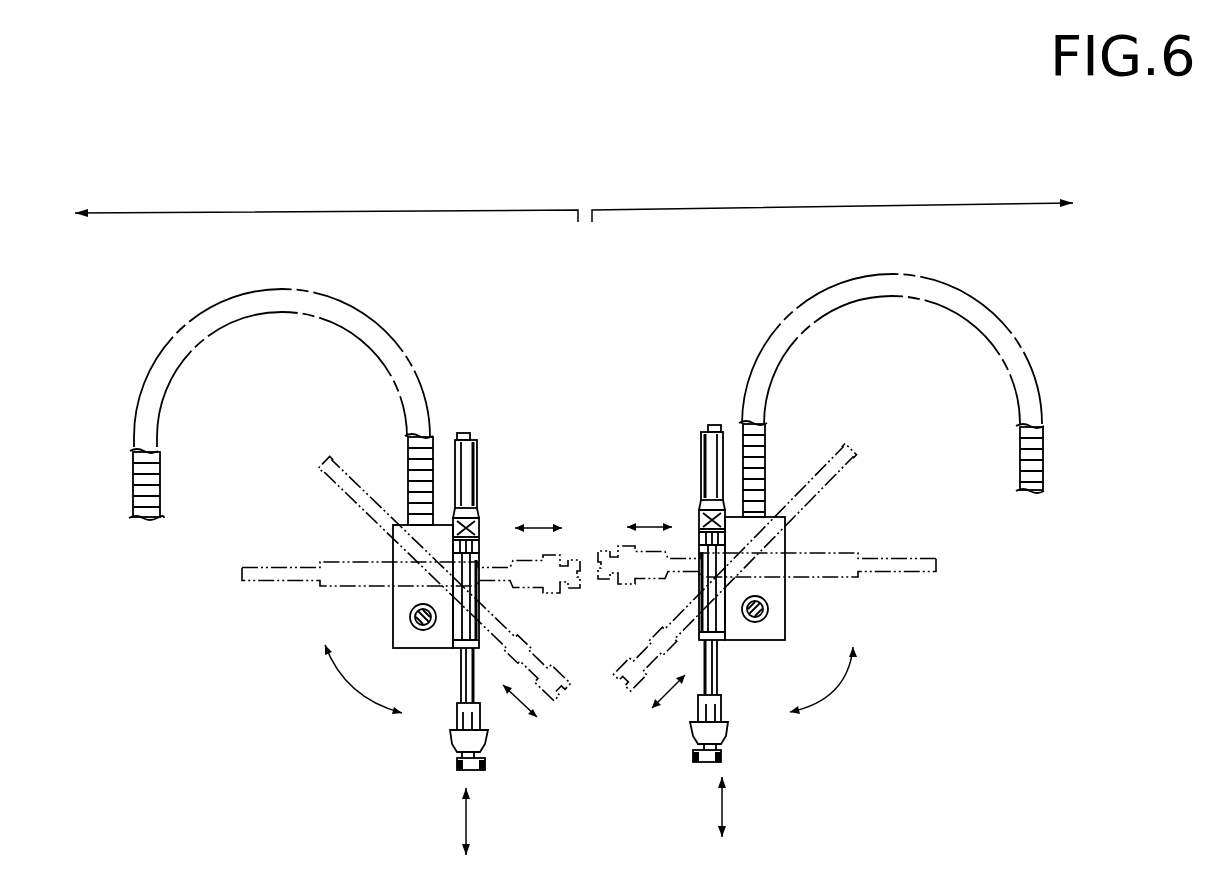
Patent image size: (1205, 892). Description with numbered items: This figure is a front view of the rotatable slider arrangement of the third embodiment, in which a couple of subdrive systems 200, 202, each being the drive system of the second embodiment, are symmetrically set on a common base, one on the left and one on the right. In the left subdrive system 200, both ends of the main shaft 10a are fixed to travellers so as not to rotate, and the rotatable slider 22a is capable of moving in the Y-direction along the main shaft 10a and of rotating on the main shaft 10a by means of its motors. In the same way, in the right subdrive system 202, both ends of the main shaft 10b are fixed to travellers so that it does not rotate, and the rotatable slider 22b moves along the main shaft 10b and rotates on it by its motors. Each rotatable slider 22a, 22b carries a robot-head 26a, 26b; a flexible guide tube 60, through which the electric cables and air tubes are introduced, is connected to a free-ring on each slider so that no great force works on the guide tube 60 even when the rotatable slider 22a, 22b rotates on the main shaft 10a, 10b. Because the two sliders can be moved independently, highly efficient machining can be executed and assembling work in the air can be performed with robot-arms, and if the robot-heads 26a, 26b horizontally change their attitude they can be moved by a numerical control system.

The subdrive system 200 is at (192, 213).
The subdrive system 202 is at (955, 203).
The flexible guide tube 60 is at (150, 368).
The main shaft 10a is at (401, 568).
The main shaft 10b is at (792, 553).
The rotatable slider 22a is at (386, 546).
The rotatable slider 22b is at (796, 625).
The robot-head 26a is at (473, 478).
The robot-head 26b is at (700, 470).